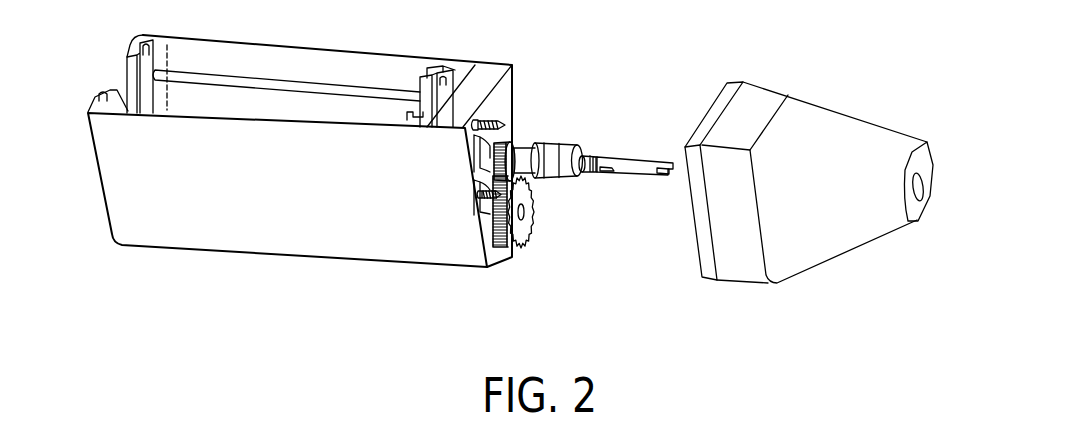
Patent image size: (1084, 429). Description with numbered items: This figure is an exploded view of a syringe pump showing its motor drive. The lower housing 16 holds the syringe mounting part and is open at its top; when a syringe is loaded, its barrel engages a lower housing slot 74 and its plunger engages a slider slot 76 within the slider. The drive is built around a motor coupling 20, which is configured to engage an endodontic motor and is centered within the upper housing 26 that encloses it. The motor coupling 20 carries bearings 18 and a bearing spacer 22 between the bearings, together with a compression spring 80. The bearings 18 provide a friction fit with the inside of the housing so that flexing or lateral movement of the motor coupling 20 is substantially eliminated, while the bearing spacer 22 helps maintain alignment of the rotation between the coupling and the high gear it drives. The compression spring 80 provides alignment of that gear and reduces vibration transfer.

The lower housing 16 is at (317, 219).
The bearings 18 is at (572, 138).
The motor coupling 20 is at (646, 151).
The bearing spacer 22 is at (552, 181).
The upper housing 26 is at (835, 223).
The lower housing slot 74 is at (107, 97).
The slider slot 76 is at (414, 106).
The compression spring 80 is at (584, 174).